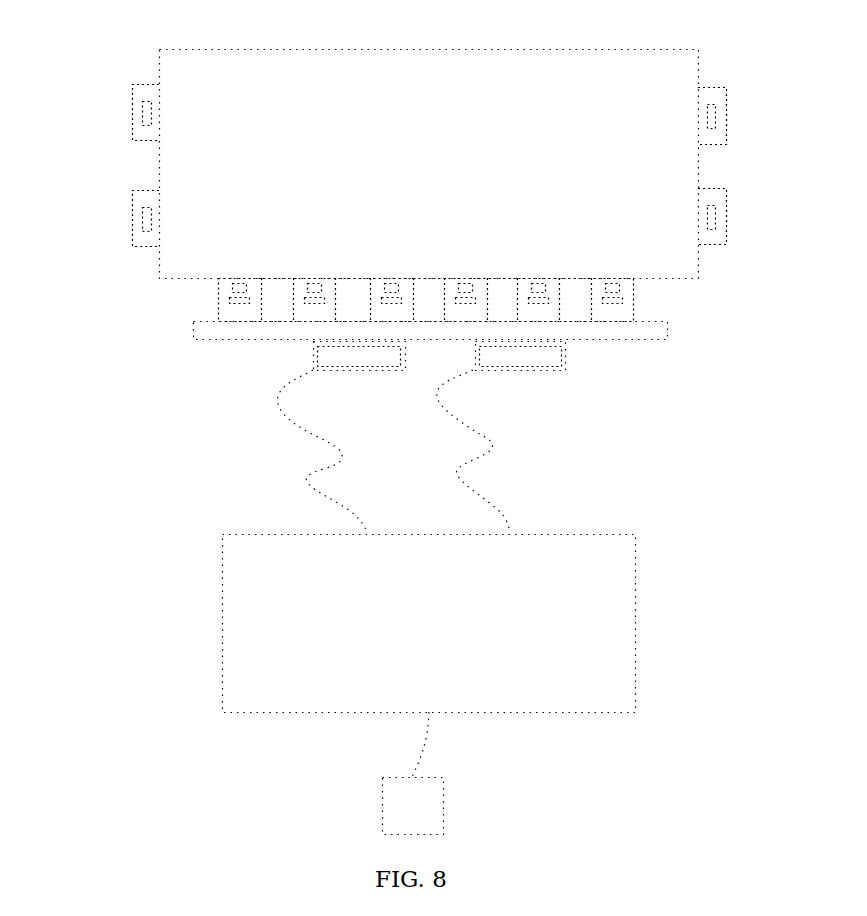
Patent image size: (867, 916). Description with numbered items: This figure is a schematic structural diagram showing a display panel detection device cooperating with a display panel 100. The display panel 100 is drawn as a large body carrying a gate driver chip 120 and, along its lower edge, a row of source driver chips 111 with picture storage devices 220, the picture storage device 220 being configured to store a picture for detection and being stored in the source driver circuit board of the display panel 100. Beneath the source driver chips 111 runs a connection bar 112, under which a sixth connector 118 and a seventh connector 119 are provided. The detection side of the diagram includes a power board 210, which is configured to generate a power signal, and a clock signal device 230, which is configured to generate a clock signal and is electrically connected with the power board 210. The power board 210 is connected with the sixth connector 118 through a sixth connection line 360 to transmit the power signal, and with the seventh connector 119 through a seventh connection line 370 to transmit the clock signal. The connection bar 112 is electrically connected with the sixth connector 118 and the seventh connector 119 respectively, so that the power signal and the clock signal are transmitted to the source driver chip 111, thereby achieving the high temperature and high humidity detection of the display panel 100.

The display panel 100 is at (157, 162).
The gate driver chip 120 is at (143, 82).
The source driver chip 111 is at (215, 298).
The connection bar 112 is at (196, 332).
The sixth connector 118 is at (314, 353).
The seventh connector 119 is at (567, 356).
The picture storage device 220 is at (622, 292).
The sixth connection line 360 is at (305, 476).
The seventh connection line 370 is at (489, 440).
The power board 210 is at (221, 621).
The clock signal device 230 is at (441, 808).